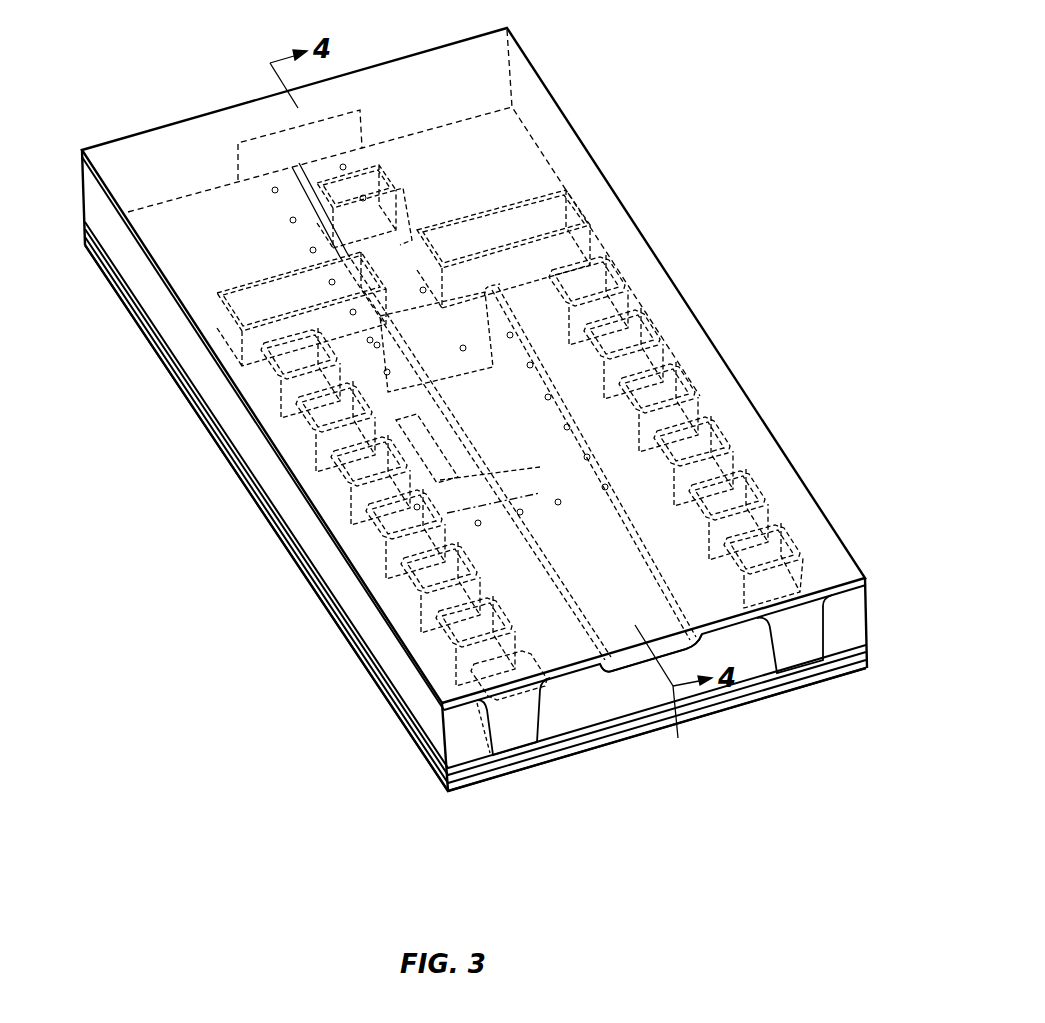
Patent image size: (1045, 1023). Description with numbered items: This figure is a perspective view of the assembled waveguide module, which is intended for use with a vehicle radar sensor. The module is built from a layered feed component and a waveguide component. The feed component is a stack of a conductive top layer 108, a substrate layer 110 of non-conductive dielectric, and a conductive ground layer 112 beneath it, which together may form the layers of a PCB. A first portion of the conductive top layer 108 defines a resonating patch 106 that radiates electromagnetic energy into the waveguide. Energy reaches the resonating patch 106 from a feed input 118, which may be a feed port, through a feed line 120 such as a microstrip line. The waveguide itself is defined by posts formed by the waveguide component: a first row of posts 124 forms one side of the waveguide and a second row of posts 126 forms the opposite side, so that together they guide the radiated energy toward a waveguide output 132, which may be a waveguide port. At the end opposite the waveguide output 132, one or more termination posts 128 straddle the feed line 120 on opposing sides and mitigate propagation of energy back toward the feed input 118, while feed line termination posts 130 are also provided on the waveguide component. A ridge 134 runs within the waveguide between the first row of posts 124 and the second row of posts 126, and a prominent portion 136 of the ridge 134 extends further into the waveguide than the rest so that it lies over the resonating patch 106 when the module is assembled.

The resonating patch 106 is at (432, 427).
The conductive top layer 108 is at (868, 651).
The substrate layer 110 is at (871, 657).
The conductive ground layer 112 is at (867, 670).
The feed input 118 is at (294, 157).
The feed line 120 is at (308, 177).
The first row of posts 124 is at (697, 425).
The second row of posts 126 is at (382, 502).
The termination post 128 is at (547, 235).
The feed line termination post 130 is at (382, 209).
The waveguide output 132 is at (574, 705).
The ridge 134 is at (689, 641).
The prominent portion of the ridge 136 is at (472, 400).